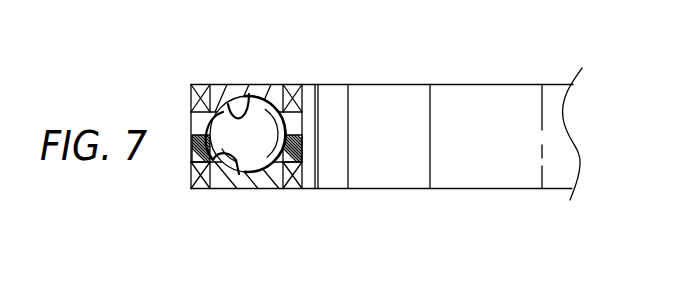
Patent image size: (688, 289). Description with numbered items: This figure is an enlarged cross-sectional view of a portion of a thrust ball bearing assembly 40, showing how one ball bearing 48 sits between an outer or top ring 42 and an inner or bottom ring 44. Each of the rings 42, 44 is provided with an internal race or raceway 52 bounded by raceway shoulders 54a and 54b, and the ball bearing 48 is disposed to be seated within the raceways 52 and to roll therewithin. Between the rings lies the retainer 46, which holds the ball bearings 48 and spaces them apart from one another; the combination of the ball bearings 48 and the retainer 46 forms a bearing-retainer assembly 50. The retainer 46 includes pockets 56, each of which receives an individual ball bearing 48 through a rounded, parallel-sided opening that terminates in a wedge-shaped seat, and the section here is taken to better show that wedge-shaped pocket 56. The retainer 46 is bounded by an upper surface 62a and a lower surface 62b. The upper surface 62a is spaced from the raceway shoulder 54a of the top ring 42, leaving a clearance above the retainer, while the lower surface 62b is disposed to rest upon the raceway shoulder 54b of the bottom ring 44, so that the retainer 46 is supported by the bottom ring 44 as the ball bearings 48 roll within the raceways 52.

The thrust ball bearing assembly 40 is at (495, 78).
The outer or top ring 42 is at (275, 84).
The inner or bottom ring 44 is at (266, 172).
The retainer 46 is at (324, 142).
The ball bearings 48 is at (250, 172).
The bearing-retainer assembly 50 is at (181, 155).
The raceways 52 is at (228, 104).
The raceway shoulder 54a is at (290, 135).
The raceway shoulder 54b is at (309, 152).
The pockets 56 is at (223, 112).
The upper surface 62a is at (294, 134).
The lower surface 62b is at (300, 165).